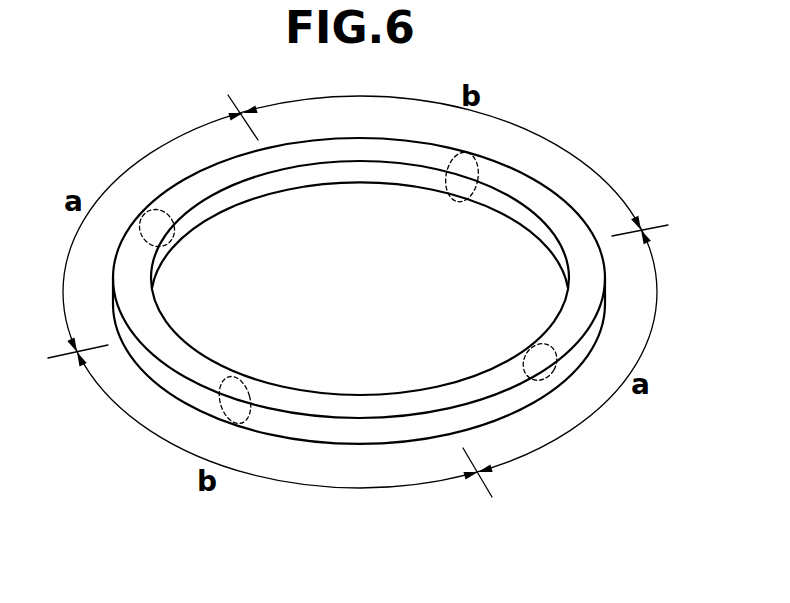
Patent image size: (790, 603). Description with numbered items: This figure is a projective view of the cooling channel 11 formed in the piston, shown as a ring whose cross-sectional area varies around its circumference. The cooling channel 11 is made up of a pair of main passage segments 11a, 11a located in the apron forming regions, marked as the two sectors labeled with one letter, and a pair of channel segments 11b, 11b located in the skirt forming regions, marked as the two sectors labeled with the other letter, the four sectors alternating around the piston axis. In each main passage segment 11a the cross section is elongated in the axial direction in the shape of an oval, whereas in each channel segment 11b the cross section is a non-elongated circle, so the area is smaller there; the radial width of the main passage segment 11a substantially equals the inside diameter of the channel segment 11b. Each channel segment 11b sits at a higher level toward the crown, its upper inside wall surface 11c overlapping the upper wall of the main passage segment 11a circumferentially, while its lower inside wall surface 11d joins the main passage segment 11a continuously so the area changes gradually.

The cooling channel 11 is at (394, 323).
The main passage segment 11a is at (523, 170).
The channel segment 11b is at (163, 197).
The upper inside wall surface 11c is at (490, 380).
The lower inside wall surface 11d is at (172, 395).